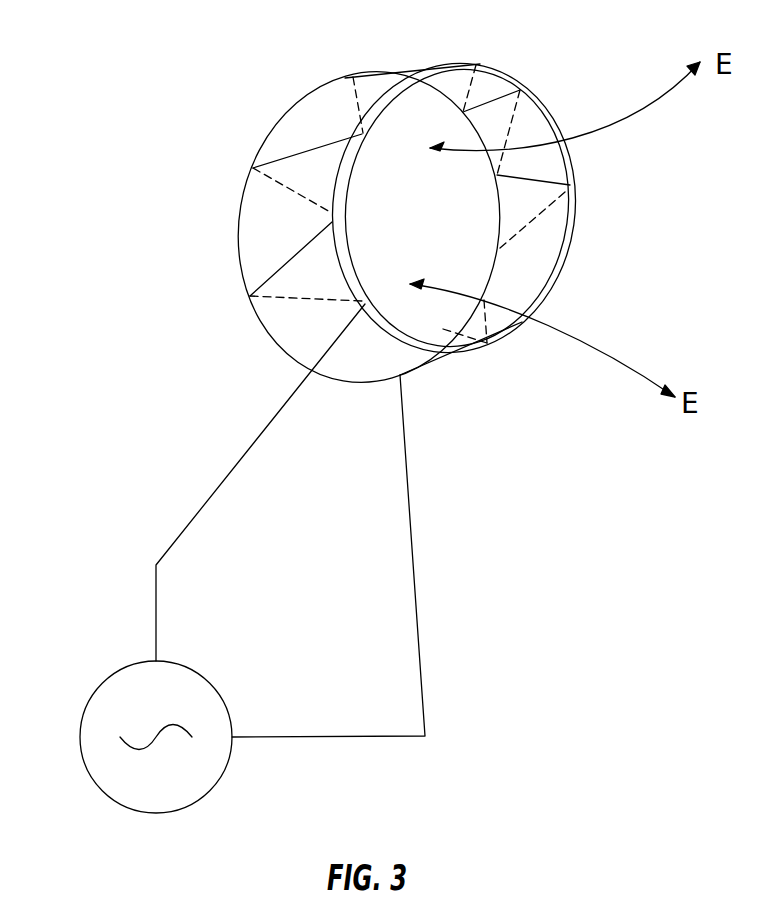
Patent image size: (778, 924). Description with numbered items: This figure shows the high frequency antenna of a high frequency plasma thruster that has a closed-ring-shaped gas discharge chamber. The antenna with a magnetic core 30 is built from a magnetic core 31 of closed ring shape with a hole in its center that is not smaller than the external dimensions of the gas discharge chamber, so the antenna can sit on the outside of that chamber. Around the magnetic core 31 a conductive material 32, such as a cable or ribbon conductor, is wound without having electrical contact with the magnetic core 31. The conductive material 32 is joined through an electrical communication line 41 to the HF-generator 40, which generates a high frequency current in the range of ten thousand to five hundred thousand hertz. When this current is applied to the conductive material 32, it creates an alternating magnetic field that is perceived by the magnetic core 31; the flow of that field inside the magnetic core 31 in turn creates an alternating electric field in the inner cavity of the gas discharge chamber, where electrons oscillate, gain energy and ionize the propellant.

The antenna with a magnetic core 30 is at (334, 78).
The magnetic core 31 is at (254, 237).
The conductive material 32 is at (281, 157).
The high frequency generator 40 is at (120, 700).
The electrical communication line 41 is at (218, 488).